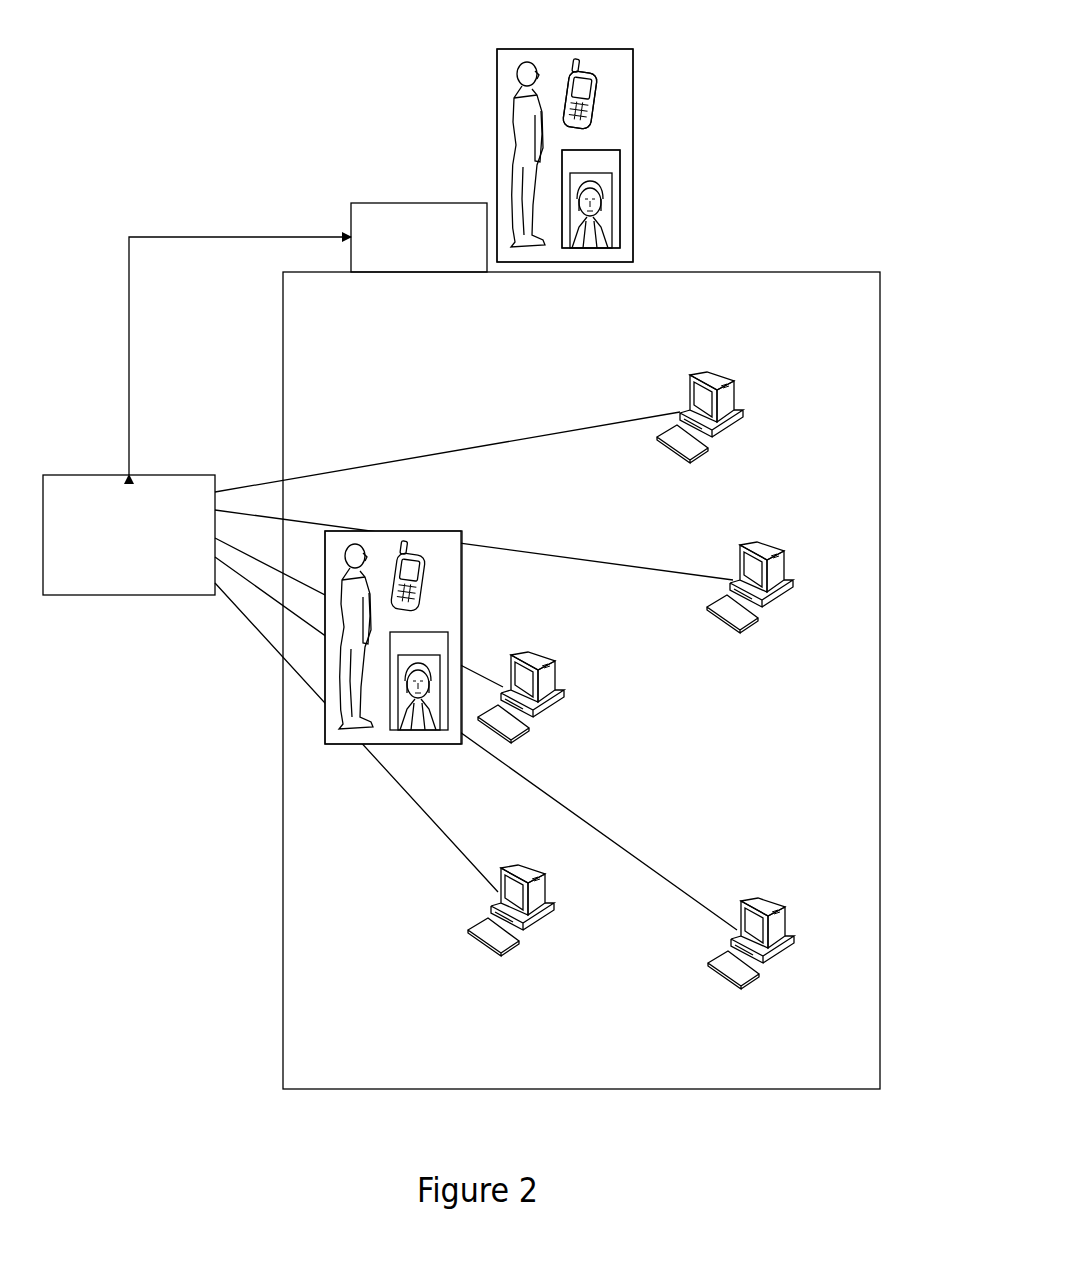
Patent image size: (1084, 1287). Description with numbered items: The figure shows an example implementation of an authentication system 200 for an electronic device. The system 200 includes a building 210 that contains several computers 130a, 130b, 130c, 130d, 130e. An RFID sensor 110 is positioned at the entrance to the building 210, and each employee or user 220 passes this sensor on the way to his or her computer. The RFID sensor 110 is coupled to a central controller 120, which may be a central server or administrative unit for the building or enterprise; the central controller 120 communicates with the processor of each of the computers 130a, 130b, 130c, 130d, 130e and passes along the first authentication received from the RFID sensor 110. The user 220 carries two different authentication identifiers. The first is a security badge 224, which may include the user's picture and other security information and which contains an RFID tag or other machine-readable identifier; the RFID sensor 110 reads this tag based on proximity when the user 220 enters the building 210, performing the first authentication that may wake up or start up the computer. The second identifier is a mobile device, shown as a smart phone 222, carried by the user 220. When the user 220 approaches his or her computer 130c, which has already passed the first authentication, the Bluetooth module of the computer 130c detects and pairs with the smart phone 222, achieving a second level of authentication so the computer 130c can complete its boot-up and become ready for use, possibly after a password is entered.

The system 200 is at (812, 124).
The building 210 is at (737, 268).
The RFID sensor 110 is at (405, 202).
The central controller 120 is at (102, 598).
The computer 130a is at (718, 373).
The computer 130b is at (755, 543).
The computer 130c is at (557, 673).
The computer 130d is at (763, 970).
The computer 130e is at (537, 935).
The user 220 is at (413, 530).
The smart phone 222 is at (582, 75).
The security badge 224 is at (618, 202).